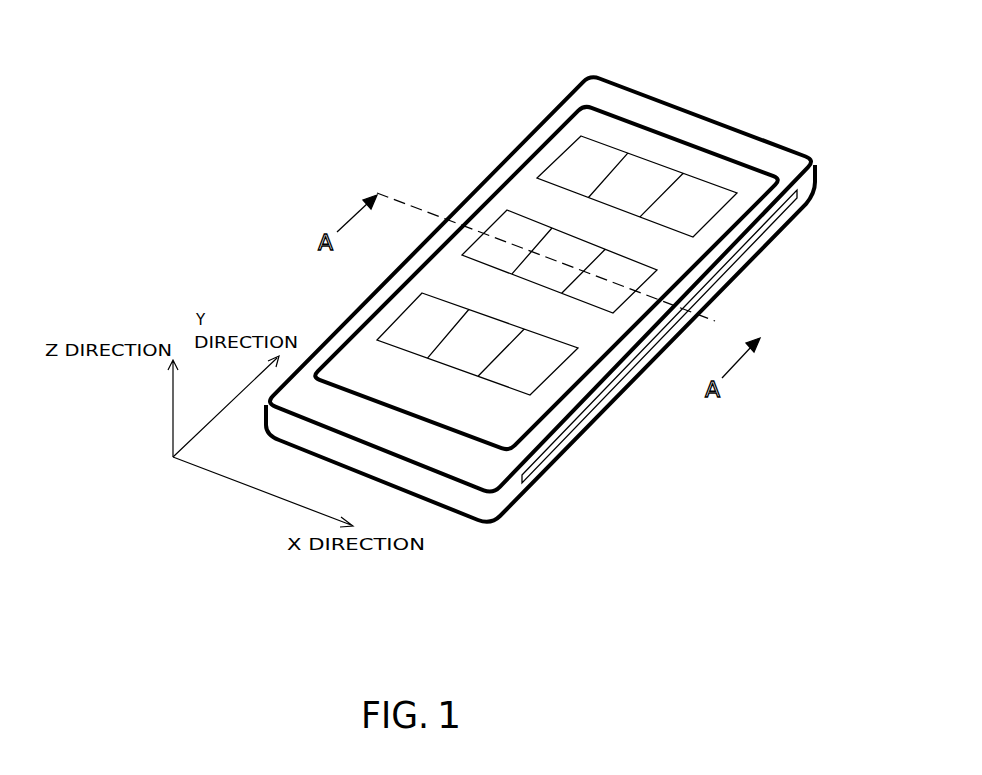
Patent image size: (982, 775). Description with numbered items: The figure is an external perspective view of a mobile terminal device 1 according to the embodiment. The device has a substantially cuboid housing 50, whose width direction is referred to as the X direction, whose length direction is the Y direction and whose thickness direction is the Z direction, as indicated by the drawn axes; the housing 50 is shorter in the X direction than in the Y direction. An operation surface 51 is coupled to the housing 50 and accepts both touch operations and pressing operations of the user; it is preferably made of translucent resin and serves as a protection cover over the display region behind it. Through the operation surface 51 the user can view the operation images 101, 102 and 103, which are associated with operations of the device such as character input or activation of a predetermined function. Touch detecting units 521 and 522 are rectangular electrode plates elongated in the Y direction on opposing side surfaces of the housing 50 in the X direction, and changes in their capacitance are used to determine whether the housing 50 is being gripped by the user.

The mobile terminal device 1 is at (566, 271).
The housing 50 is at (546, 271).
The operation surface 51 is at (367, 377).
The touch detecting unit 521 is at (518, 138).
The touch detecting unit 522 is at (757, 251).
The operation image 101 is at (722, 198).
The operation image 102 is at (650, 280).
The operation image 103 is at (548, 372).